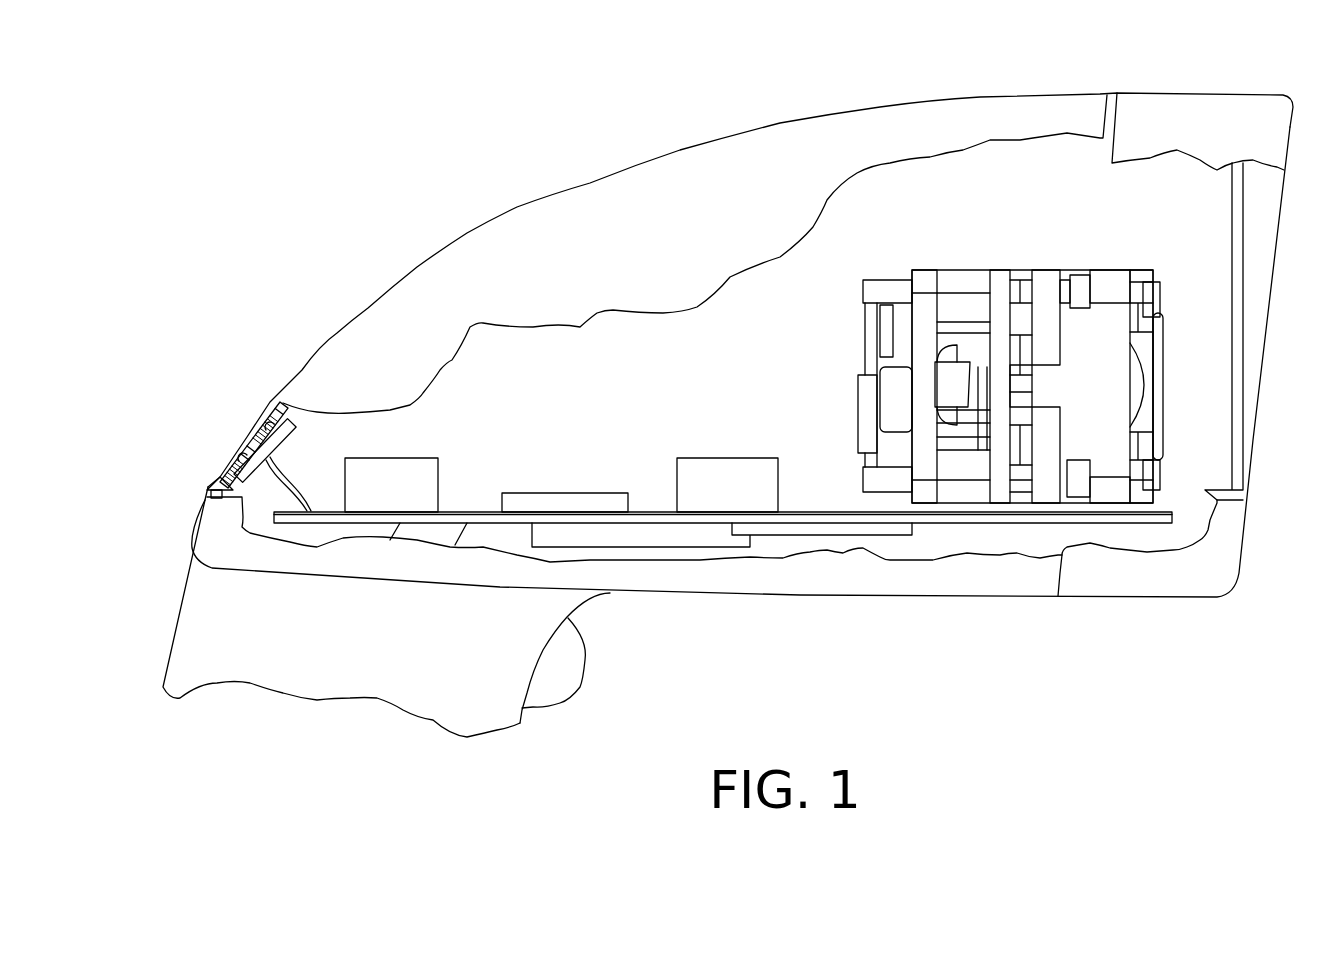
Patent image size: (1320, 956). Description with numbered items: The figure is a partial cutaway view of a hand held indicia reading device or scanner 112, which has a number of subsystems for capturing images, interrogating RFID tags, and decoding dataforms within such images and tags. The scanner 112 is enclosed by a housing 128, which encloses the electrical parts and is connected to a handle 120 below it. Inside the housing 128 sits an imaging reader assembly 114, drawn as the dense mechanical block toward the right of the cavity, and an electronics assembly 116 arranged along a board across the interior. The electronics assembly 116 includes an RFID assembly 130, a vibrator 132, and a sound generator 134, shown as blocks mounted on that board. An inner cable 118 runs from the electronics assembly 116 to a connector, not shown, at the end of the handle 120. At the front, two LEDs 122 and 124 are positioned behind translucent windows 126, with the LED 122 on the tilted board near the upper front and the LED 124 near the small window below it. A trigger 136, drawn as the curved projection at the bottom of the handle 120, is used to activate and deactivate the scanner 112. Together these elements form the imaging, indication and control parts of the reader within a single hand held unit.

The scanner 112 is at (450, 135).
The imaging reader assembly 114 is at (1165, 270).
The electronics assembly 116 is at (593, 426).
The inner cable 118 is at (458, 542).
The handle 120 is at (179, 607).
The LED 122 is at (290, 405).
The LED 124 is at (221, 492).
The translucent windows 126 is at (260, 413).
The housing 128 is at (367, 307).
The RFID assembly 130 is at (398, 458).
The vibrator 132 is at (728, 458).
The sound generator 134 is at (525, 493).
The trigger 136 is at (587, 667).